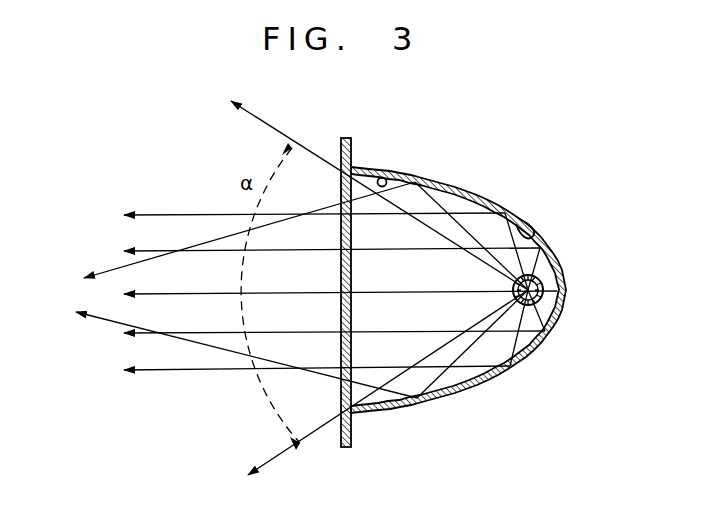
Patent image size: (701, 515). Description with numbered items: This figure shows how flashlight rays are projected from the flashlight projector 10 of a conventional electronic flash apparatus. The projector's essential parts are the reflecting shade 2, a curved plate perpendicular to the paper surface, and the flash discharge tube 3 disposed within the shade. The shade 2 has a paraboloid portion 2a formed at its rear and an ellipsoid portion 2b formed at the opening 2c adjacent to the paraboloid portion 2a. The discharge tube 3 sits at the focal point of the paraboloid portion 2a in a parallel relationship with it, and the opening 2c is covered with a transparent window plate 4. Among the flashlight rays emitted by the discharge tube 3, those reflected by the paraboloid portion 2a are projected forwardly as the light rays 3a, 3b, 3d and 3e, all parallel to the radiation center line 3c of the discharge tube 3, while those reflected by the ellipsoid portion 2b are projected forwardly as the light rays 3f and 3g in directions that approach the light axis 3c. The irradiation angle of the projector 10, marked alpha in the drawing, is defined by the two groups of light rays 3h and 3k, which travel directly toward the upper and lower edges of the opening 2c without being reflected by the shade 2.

The flashlight projector 10 is at (480, 157).
The reflecting shade 2 is at (516, 212).
The paraboloid portion 2a is at (533, 231).
The ellipsoid portion 2b is at (386, 177).
The opening 2c is at (338, 186).
The flash discharge tube 3 is at (544, 291).
The transparent window plate 4 is at (351, 307).
The light ray 3a is at (312, 247).
The light ray 3b is at (318, 265).
The radiation center line 3c is at (327, 295).
The light ray 3d is at (321, 318).
The light ray 3e is at (312, 336).
The light ray 3f is at (290, 237).
The light ray 3g is at (290, 344).
The light ray 3h is at (364, 189).
The light ray 3k is at (377, 396).